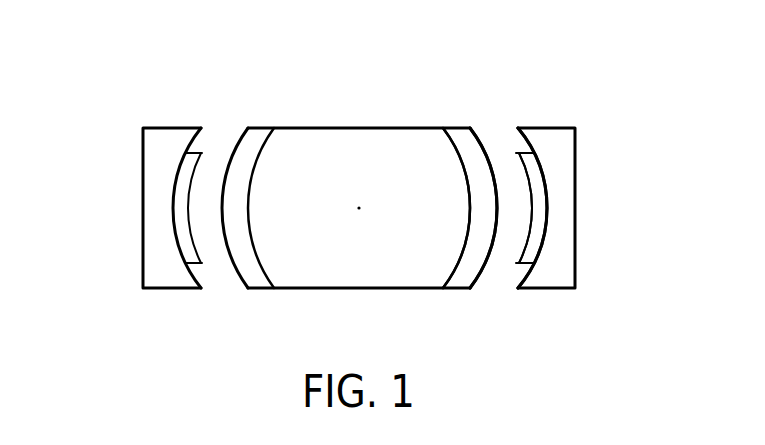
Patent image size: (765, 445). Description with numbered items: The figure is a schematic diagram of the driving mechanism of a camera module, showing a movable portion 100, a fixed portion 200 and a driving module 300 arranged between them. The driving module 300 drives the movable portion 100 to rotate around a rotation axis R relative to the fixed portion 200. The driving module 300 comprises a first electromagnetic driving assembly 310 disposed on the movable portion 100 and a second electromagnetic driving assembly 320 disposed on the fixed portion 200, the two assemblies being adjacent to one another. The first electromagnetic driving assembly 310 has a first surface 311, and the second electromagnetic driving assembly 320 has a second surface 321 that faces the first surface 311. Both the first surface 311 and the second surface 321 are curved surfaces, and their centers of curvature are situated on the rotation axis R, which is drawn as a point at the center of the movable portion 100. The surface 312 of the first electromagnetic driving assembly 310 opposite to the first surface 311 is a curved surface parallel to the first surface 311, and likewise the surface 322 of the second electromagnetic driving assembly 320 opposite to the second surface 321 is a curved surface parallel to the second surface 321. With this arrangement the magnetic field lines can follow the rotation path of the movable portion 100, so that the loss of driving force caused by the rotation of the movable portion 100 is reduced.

The movable portion 100 is at (318, 128).
The rotation axis R is at (359, 208).
The fixed portion 200 is at (143, 172).
The driving module 300 is at (277, 40).
The first electromagnetic driving assembly 310 is at (259, 142).
The first surface 311 is at (494, 268).
The surface opposite to the first surface 312 is at (460, 160).
The second electromagnetic driving assembly 320 is at (189, 150).
The second surface 321 is at (513, 268).
The surface opposite to the second surface 322 is at (546, 203).